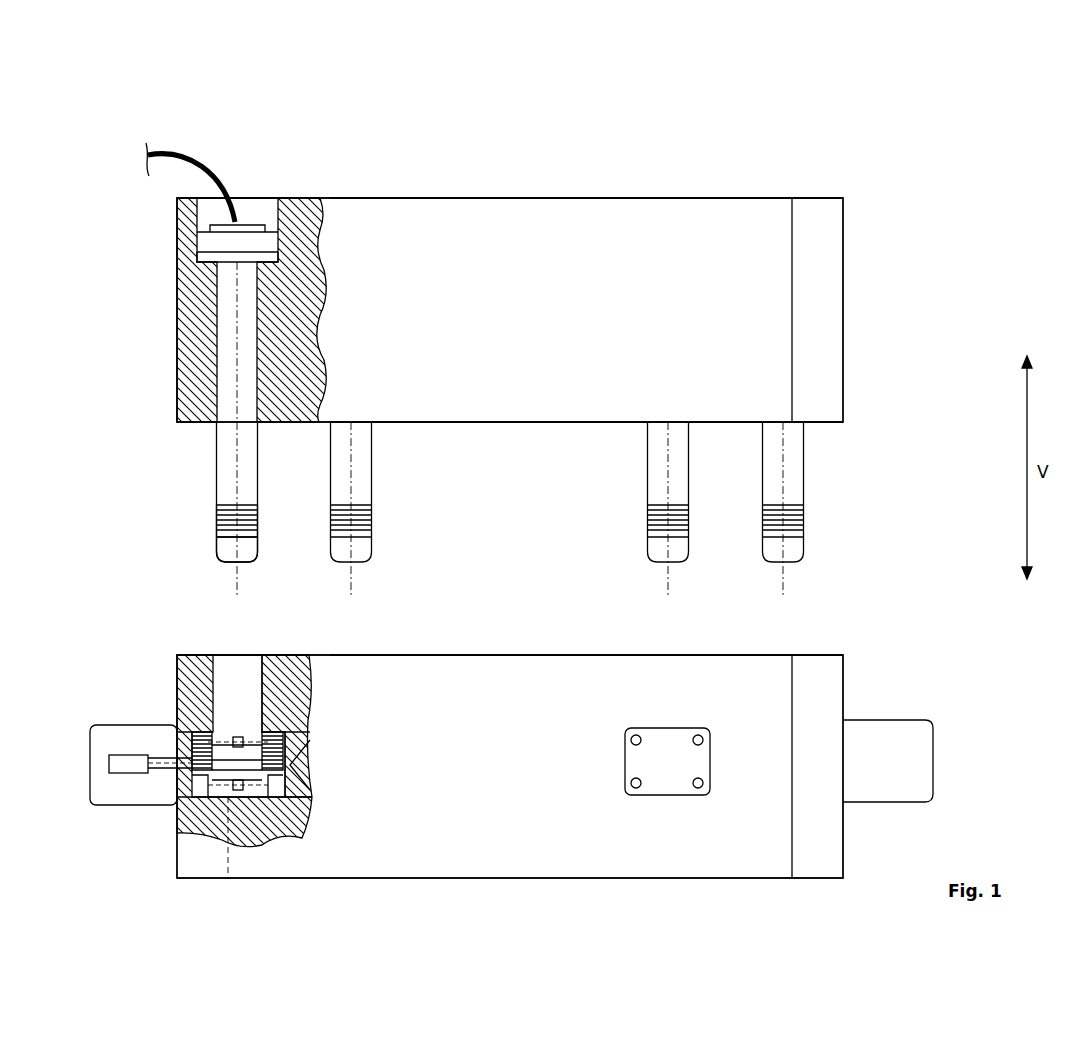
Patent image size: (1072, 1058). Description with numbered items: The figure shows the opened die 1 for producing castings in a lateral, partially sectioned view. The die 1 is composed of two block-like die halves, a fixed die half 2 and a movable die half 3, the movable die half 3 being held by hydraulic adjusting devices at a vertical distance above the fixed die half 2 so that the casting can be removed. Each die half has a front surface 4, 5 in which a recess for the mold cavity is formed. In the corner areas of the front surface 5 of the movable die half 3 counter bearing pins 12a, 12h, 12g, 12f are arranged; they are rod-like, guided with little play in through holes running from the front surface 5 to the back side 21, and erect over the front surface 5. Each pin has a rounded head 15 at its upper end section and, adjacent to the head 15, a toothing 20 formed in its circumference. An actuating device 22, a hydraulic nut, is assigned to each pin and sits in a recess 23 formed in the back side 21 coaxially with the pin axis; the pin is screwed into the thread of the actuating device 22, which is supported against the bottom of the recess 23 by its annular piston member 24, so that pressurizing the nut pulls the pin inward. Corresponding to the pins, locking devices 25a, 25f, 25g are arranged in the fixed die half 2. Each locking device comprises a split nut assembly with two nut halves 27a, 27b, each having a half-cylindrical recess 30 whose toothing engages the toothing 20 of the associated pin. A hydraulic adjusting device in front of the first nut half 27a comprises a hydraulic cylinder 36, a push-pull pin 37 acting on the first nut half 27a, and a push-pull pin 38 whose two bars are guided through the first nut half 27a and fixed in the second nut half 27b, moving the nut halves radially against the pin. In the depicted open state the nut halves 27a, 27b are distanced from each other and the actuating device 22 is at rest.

The die 1 is at (886, 162).
The fixed die half 2 is at (490, 855).
The movable die half 3 is at (425, 220).
The front surface of the fixed die half 4 is at (541, 647).
The front surface of the movable die half 5 is at (562, 438).
The counter bearing pin 12a is at (230, 457).
The counter bearing pin 12f is at (796, 460).
The counter bearing pin 12g is at (678, 460).
The counter bearing pin 12h is at (358, 447).
The rounded head 15 is at (248, 552).
The toothing 20 is at (218, 527).
The back side of the movable die half 21 is at (568, 190).
The actuating device 22 is at (207, 236).
The recess 23 is at (268, 210).
The annular piston member 24 is at (203, 255).
The locking device 25a is at (128, 700).
The locking device 25f is at (905, 766).
The locking device 25g is at (672, 765).
The first nut half 27a is at (180, 800).
The second nut half 27b is at (312, 805).
The recess of the nut halves 30 is at (207, 830).
The hydraulic cylinder 36 is at (118, 768).
The push-pull pin 37 is at (163, 758).
The push-pull pin 38 is at (252, 765).